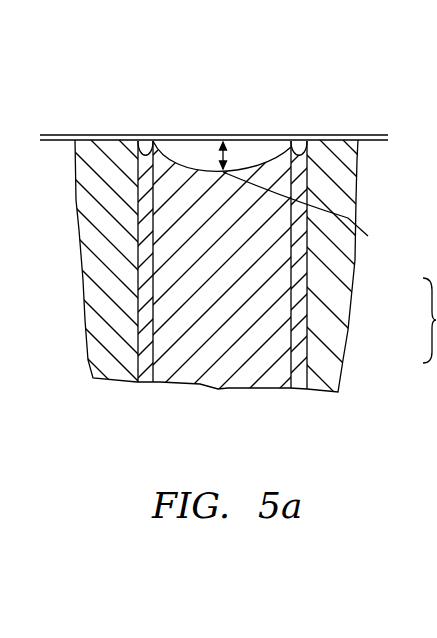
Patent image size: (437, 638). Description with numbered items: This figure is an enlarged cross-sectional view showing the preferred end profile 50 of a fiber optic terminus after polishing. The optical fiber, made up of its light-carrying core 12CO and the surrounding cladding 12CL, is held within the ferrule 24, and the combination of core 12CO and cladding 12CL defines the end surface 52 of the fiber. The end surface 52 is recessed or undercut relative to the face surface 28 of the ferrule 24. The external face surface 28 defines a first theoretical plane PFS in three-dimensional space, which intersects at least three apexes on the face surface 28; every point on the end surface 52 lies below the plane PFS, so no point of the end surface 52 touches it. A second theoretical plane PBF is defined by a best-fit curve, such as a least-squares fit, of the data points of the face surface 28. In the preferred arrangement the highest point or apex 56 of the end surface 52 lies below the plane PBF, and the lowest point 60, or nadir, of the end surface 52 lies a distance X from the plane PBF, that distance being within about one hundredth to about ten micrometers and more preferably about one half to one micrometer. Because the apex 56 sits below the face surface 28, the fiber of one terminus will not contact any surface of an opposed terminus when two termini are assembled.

The end profile 50 is at (223, 264).
The face surface 28 is at (90, 134).
The ferrule 24 is at (92, 283).
The apex 56 is at (155, 142).
The end surface 52 is at (200, 168).
The lowest point 60 is at (310, 211).
The light-carrying core 12CO is at (270, 292).
The cladding 12CL is at (297, 332).
The distance X is at (225, 158).
The first theoretical plane PFS is at (372, 134).
The second theoretical plane PBF is at (372, 140).